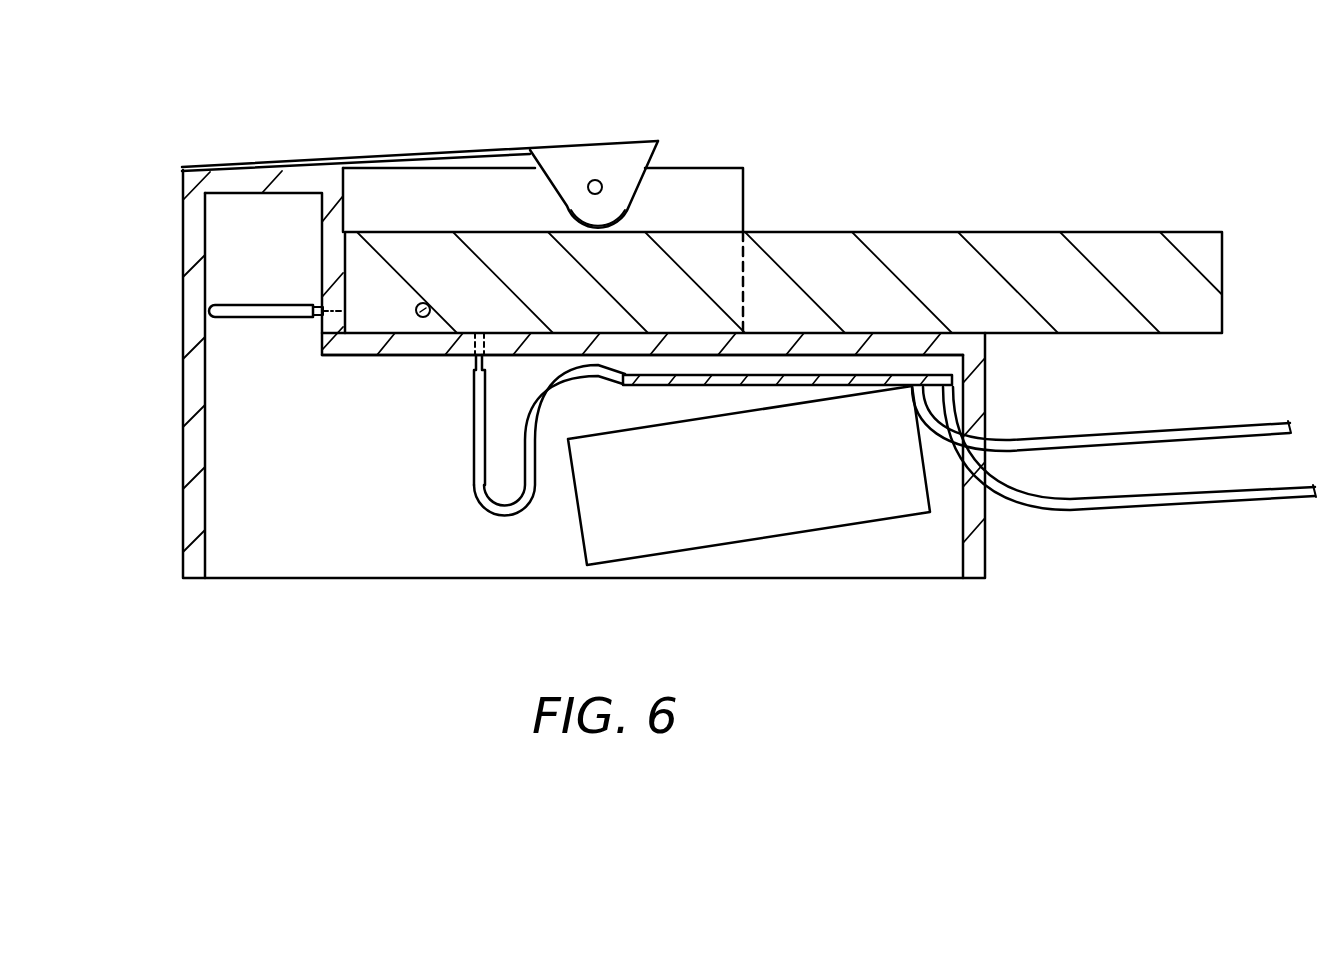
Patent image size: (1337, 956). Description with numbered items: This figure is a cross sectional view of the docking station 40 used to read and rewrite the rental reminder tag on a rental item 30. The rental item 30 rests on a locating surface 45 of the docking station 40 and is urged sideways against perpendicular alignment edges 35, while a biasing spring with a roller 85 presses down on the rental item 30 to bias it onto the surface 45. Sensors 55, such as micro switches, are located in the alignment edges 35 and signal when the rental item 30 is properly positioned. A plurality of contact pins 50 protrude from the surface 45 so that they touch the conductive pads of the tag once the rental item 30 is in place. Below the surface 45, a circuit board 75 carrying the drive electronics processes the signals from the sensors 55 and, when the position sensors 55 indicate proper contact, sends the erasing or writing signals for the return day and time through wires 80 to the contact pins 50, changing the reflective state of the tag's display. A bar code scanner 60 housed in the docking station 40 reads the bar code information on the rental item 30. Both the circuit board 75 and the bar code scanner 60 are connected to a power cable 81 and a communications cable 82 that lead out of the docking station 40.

The docking station 40 is at (222, 147).
The alignment edges 35 is at (345, 210).
The rental item 30 is at (1140, 232).
The biasing spring with roller 85 is at (622, 160).
The surface 45 is at (868, 333).
The sensors 55 is at (242, 315).
The contact pins 50 is at (473, 440).
The wires 80 is at (500, 512).
The circuit board 75 is at (678, 388).
The bar code scanner 60 is at (765, 538).
The power cable 81 is at (1230, 437).
The communications cable 82 is at (1210, 503).